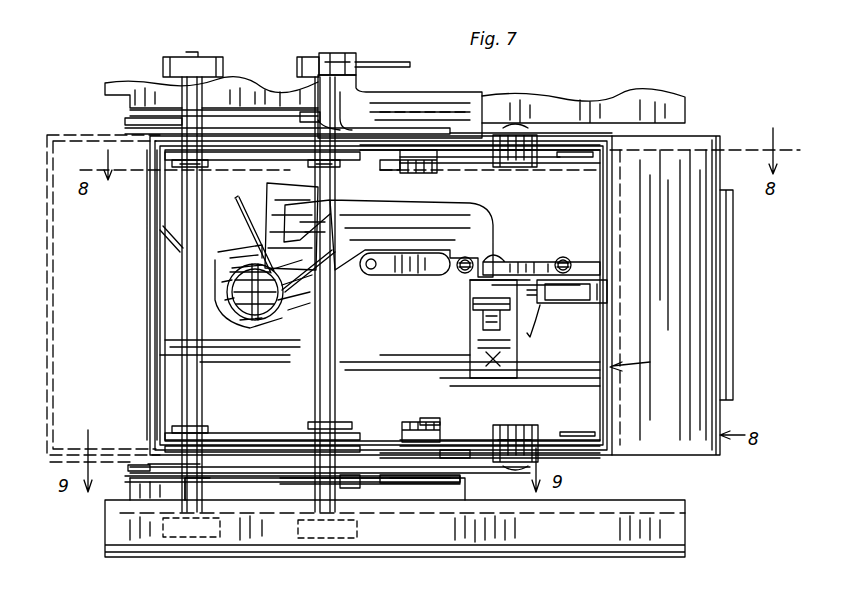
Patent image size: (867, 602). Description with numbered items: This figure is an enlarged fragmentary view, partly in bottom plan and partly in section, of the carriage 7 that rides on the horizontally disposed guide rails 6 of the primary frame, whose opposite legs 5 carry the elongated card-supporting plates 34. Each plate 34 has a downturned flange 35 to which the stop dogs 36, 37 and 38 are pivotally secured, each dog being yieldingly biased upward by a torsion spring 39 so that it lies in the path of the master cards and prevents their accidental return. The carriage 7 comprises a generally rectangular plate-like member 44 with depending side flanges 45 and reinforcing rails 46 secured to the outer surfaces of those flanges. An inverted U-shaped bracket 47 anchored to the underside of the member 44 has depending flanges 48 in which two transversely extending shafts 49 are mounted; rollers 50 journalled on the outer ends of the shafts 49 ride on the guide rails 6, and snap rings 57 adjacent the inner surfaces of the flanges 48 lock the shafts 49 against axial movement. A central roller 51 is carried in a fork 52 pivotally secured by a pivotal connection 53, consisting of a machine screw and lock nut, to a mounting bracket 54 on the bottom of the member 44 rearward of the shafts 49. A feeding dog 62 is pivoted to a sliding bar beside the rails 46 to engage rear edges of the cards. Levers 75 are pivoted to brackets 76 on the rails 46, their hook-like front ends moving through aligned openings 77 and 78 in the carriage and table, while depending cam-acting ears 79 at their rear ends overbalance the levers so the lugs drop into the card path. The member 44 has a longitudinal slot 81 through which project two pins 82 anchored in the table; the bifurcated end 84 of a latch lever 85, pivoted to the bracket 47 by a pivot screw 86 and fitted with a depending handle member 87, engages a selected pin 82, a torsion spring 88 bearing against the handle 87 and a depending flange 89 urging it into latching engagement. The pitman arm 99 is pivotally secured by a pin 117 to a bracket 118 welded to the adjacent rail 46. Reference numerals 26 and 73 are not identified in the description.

The leg 5 is at (500, 553).
The guide rail 6 is at (228, 535).
The carriage 7 is at (645, 352).
The base 26 is at (599, 594).
The card-supporting plate 34 is at (518, 92).
The downturned flange 35 is at (262, 473).
The stop dog 36 is at (428, 484).
The stop dog 37 is at (348, 480).
The stop dog 38 is at (130, 470).
The torsion spring 39 is at (147, 490).
The plate-like member 44 is at (562, 210).
The depending side flange 45 is at (365, 442).
The reinforcing rail 46 is at (238, 480).
The U-shaped bracket 47 is at (282, 393).
The depending flange 48 is at (232, 432).
The shaft 49 is at (360, 368).
The roller 50 is at (305, 560).
The roller 51 is at (605, 292).
The fork 52 is at (540, 327).
The pivotal connection 53 is at (470, 318).
The mounting bracket 54 is at (470, 345).
The snap ring 57 is at (345, 420).
The feeding dog 62 is at (456, 460).
The side panel 73 is at (735, 282).
The lever 75 is at (462, 428).
The bracket 76 is at (516, 410).
The opening 77 is at (425, 175).
The opening 78 is at (398, 172).
The cam-acting ear 79 is at (570, 418).
The slot 81 is at (392, 276).
The pin 82 is at (585, 248).
The bifurcated end 84 is at (505, 262).
The latch lever 85 is at (422, 235).
The pivot screw 86 is at (275, 318).
The handle member 87 is at (300, 228).
The torsion spring 88 is at (255, 233).
The depending flange 89 is at (160, 275).
The pitman arm 99 is at (400, 62).
The pin 117 is at (345, 52).
The bracket 118 is at (428, 103).